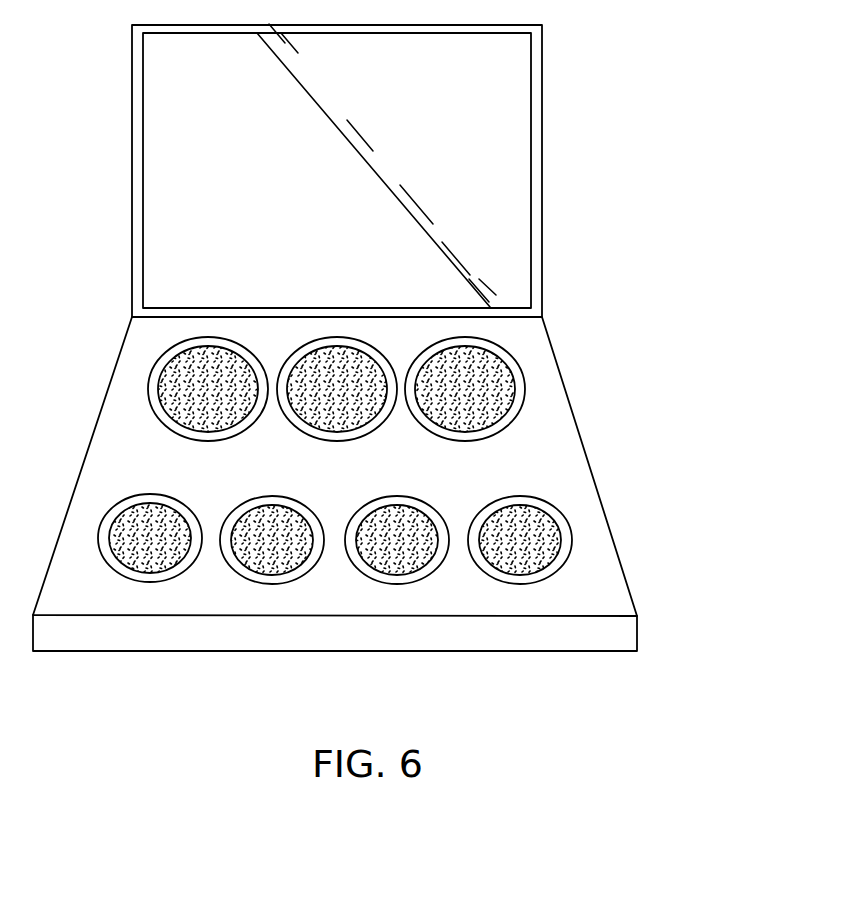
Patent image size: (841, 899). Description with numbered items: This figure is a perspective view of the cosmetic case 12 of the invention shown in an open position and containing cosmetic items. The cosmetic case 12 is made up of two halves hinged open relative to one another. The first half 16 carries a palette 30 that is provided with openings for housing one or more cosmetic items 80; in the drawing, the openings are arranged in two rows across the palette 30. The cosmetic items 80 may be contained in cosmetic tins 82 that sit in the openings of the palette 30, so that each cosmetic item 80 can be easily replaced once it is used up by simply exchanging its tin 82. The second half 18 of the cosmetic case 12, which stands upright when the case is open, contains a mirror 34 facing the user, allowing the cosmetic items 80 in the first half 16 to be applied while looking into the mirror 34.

The cosmetic case 12 is at (613, 250).
The first half 16 is at (557, 443).
The second half 18 is at (538, 100).
The palette 30 is at (418, 473).
The mirror 34 is at (333, 202).
The cosmetic items 80 is at (473, 403).
The cosmetic tins 82 is at (487, 350).